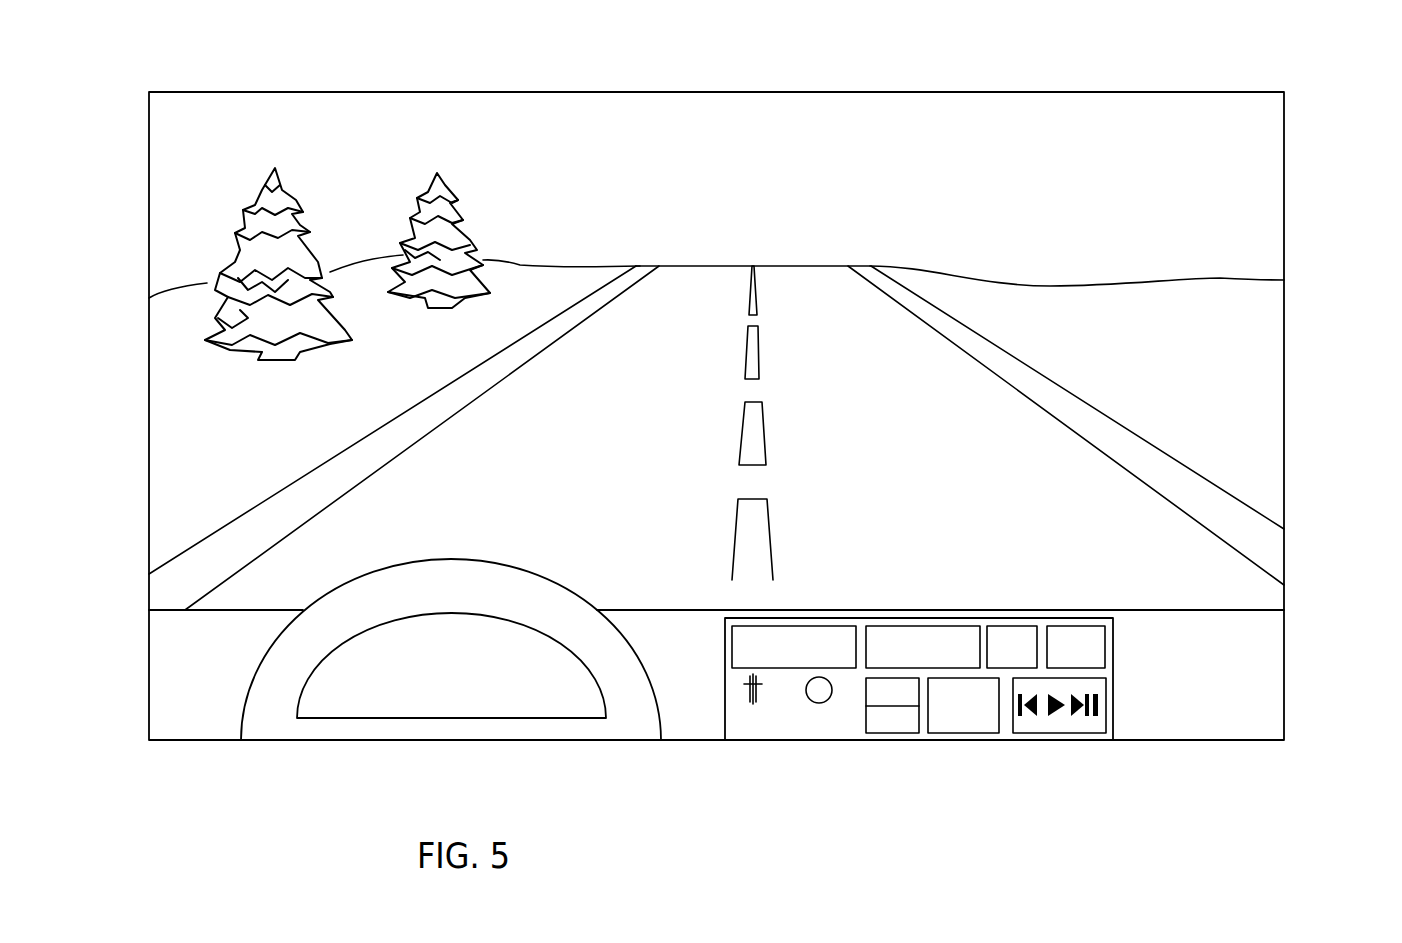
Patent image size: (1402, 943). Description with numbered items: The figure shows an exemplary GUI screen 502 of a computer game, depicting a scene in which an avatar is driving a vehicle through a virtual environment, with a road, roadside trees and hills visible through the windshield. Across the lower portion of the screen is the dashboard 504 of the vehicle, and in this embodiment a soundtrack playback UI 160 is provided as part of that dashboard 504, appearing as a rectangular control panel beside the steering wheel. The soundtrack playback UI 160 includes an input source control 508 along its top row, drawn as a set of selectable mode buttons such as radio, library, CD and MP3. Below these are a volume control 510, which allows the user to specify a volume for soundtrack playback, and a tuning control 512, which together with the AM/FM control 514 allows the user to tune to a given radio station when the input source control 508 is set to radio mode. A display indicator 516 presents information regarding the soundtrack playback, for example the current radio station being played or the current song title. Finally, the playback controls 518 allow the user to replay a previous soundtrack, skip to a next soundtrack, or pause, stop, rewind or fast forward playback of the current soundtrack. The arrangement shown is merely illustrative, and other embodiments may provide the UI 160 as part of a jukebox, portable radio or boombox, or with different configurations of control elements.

The GUI screen 502 is at (1062, 92).
The dashboard 504 is at (1305, 740).
The input source control 508 is at (1113, 605).
The soundtrack playback UI 160 is at (1113, 667).
The volume control 510 is at (777, 747).
The tuning control 512 is at (857, 747).
The AM/FM control 514 is at (919, 747).
The display indicator 516 is at (999, 747).
The playback controls 518 is at (1106, 747).